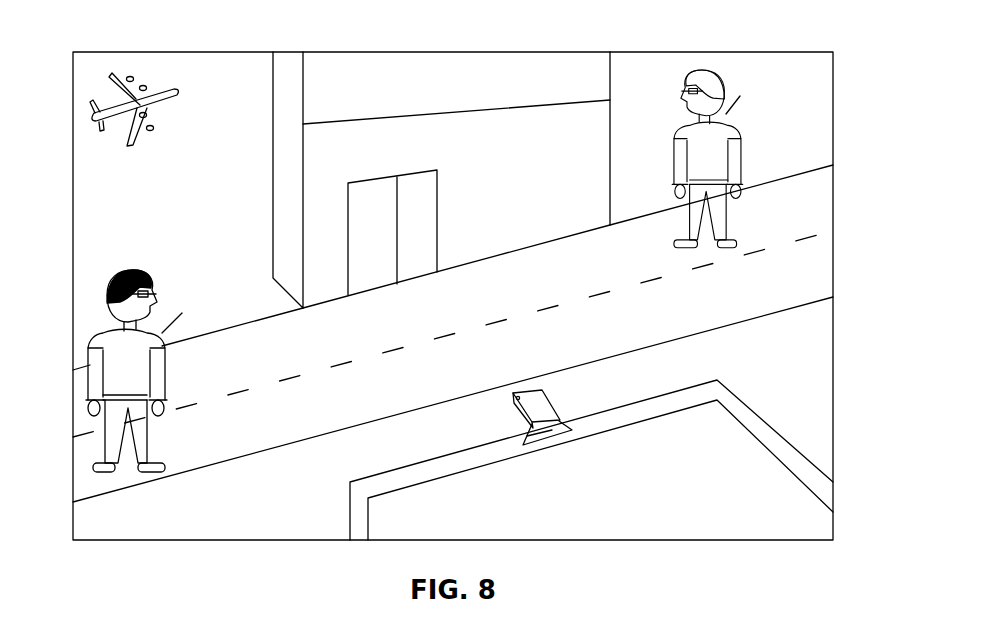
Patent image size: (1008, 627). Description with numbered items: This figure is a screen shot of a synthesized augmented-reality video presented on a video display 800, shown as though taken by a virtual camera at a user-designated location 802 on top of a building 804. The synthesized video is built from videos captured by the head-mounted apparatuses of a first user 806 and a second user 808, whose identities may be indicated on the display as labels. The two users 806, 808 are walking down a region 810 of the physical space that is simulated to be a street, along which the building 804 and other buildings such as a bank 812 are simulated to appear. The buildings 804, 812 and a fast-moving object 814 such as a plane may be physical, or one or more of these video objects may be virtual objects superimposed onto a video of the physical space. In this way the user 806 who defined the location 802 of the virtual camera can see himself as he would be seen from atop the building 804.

The video display 800 is at (833, 90).
The location of virtual camera 802 is at (548, 412).
The building 804 is at (377, 511).
The first user 806 is at (92, 342).
The second user 808 is at (733, 133).
The region of physical space 810 is at (712, 316).
The bank 812 is at (346, 115).
The fast-moving object 814 is at (173, 98).